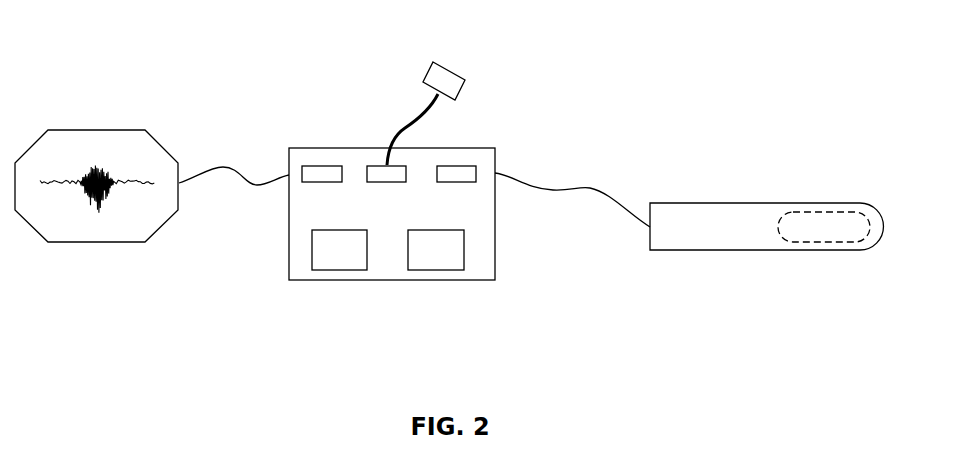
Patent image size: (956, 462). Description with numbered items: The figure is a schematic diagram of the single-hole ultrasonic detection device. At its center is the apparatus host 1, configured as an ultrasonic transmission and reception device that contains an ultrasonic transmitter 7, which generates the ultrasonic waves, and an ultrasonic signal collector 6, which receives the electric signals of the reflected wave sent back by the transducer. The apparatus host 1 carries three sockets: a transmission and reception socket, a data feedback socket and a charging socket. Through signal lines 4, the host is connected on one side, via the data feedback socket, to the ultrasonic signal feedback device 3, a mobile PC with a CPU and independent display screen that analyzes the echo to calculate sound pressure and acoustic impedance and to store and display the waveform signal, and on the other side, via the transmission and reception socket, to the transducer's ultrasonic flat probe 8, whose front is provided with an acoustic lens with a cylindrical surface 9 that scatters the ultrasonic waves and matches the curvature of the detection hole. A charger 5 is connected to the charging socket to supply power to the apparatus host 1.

The apparatus host 1 is at (359, 145).
The ultrasonic signal feedback device 3 is at (68, 123).
The signal line 4 is at (248, 192).
The charger 5 is at (450, 72).
The ultrasonic signal collector 6 is at (333, 272).
The ultrasonic transmitter 7 is at (432, 272).
The ultrasonic flat probe 8 is at (777, 195).
The acoustic lens with a cylindrical surface 9 is at (822, 243).